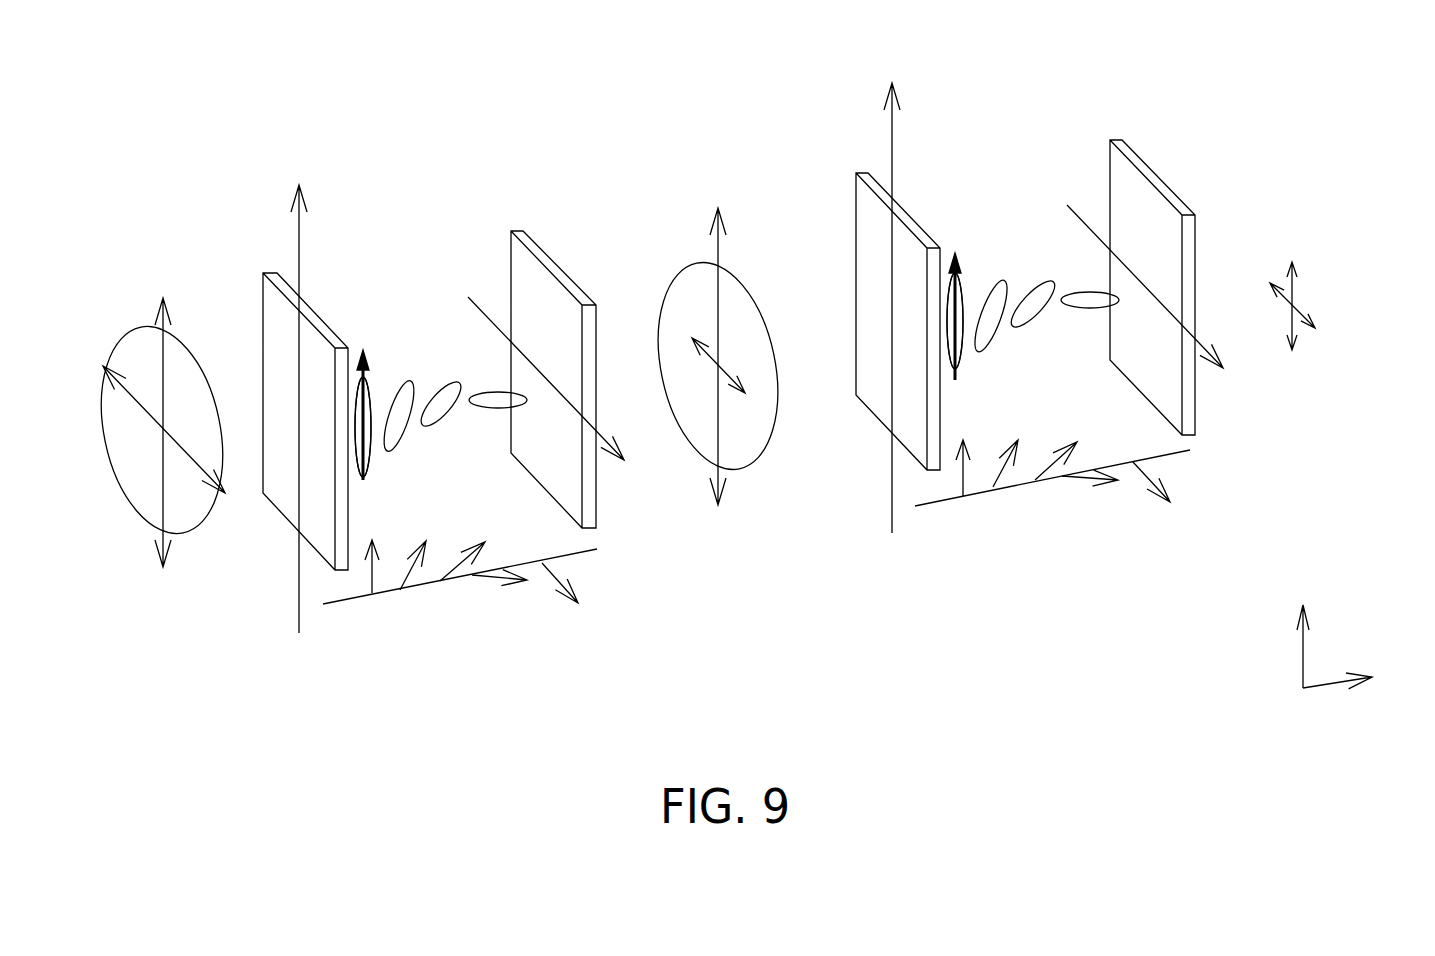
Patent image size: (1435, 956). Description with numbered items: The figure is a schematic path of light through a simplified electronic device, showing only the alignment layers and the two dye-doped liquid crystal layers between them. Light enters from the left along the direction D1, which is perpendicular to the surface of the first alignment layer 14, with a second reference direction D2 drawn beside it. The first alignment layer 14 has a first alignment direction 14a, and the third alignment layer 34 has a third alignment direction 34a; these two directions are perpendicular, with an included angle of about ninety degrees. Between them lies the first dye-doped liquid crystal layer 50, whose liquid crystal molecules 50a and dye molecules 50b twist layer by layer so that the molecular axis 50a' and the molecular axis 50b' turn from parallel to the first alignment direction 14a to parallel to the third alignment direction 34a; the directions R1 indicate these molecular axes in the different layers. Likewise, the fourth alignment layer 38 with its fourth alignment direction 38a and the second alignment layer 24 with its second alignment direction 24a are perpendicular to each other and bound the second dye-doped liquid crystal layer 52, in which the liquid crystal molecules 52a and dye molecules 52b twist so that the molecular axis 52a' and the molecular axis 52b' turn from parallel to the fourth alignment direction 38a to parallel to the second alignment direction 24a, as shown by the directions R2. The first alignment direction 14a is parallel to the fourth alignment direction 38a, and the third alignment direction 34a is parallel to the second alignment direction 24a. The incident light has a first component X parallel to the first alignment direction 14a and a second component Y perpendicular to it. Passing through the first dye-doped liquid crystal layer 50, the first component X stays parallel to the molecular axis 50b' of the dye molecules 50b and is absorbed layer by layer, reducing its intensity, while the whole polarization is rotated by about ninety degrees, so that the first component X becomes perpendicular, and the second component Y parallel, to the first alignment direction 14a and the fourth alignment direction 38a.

The first alignment layer 14 is at (277, 483).
The first alignment direction 14a is at (299, 237).
The first dye-doped liquid crystal layer 50 is at (400, 268).
The liquid crystal molecules 50a is at (445, 446).
The dye molecules 50b is at (471, 425).
The molecular axis 50a' is at (427, 413).
The molecular axis 50b' is at (363, 427).
The third alignment layer 34 is at (592, 497).
The third alignment direction 34a is at (481, 305).
The directions R1 is at (388, 626).
The fourth alignment layer 38 is at (875, 395).
The fourth alignment direction 38a is at (892, 148).
The second dye-doped liquid crystal layer 52 is at (992, 197).
The liquid crystal molecules 52a is at (1012, 351).
The dye molecules 52b is at (1057, 328).
The molecular axis 52a' is at (1018, 315).
The molecular axis 52b' is at (955, 321).
The second alignment layer 24 is at (1172, 397).
The second alignment direction 24a is at (1083, 222).
The directions R2 is at (1010, 524).
The first component X is at (163, 378).
The second component Y is at (142, 410).
The direction D1 is at (1361, 683).
The direction D2 is at (1298, 630).